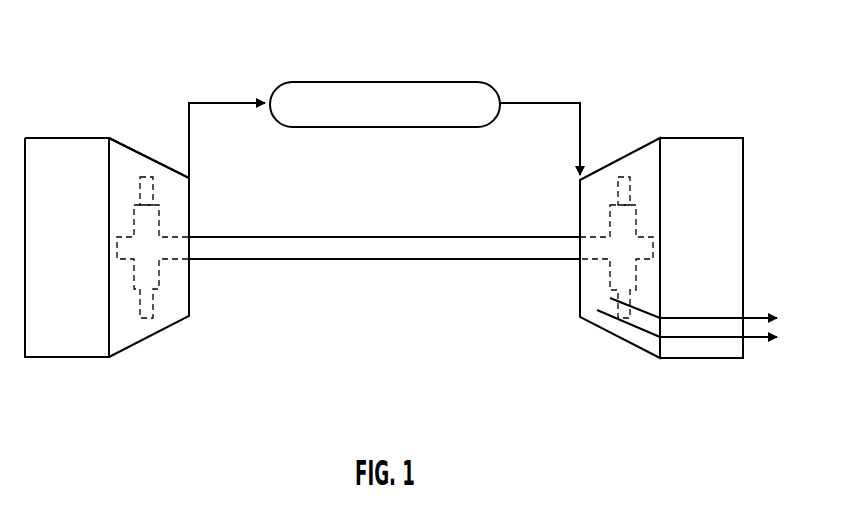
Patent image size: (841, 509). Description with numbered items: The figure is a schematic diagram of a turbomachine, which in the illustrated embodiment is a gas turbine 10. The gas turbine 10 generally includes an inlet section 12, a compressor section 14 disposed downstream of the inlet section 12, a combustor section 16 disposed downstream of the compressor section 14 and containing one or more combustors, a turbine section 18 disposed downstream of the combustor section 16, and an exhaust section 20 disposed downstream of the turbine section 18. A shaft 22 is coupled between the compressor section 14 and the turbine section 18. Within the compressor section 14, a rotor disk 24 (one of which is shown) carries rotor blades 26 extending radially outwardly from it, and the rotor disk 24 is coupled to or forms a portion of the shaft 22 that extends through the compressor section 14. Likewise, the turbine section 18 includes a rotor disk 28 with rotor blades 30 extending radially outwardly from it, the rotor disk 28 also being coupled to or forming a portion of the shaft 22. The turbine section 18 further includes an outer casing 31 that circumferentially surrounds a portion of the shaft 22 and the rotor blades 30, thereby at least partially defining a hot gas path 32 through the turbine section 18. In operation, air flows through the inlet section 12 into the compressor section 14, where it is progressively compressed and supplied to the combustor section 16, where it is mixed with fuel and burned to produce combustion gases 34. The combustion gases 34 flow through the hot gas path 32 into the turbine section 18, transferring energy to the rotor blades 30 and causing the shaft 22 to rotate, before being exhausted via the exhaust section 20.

The gas turbine 10 is at (646, 145).
The inlet section 12 is at (43, 138).
The compressor section 14 is at (140, 152).
The combustor section 16 is at (440, 82).
The turbine section 18 is at (236, 46).
The exhaust section 20 is at (722, 137).
The shaft 22 is at (337, 259).
The rotor disk 24 is at (134, 222).
The rotor blade 26 is at (139, 185).
The rotor disk 28 is at (610, 214).
The rotor blade 30 is at (625, 177).
The outer casing 31 is at (642, 350).
The hot gas path 32 is at (620, 332).
The combustion gases 34 is at (530, 103).